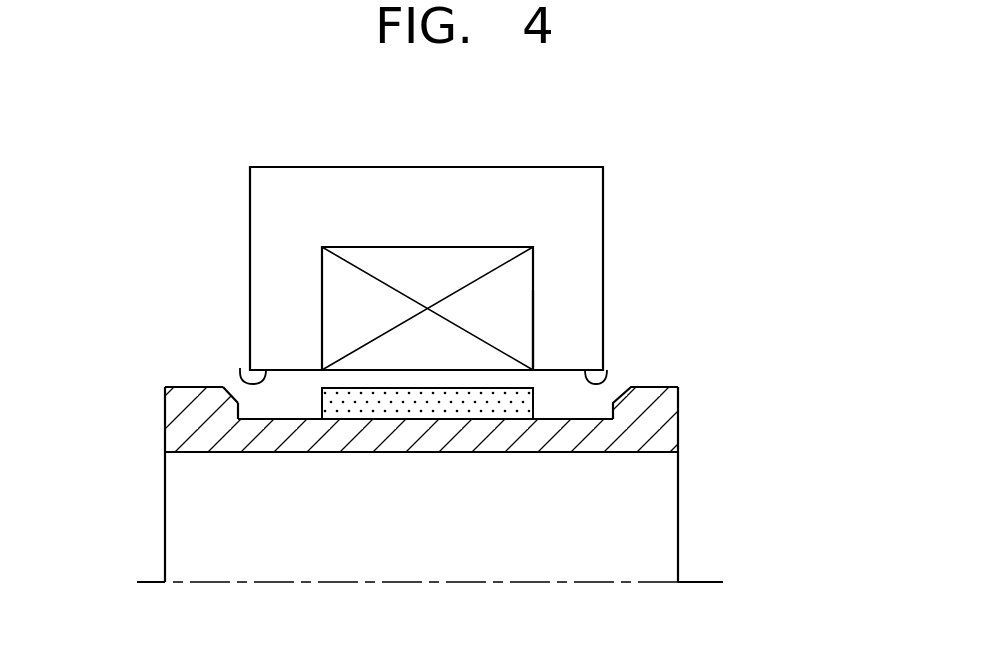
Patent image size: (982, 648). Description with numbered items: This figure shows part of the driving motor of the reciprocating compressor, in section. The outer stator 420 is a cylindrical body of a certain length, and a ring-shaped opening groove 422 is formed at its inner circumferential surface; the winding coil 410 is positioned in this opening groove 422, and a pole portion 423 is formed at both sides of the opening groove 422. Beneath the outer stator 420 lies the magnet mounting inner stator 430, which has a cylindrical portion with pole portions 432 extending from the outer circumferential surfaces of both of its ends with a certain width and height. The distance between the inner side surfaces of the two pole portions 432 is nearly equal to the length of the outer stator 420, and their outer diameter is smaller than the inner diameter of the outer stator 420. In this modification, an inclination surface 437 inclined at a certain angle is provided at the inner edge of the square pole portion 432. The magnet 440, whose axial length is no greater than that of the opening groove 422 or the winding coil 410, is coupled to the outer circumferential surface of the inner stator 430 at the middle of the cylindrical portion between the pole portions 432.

The winding coil 410 is at (398, 263).
The outer stator 420 is at (612, 253).
The opening groove 422 is at (533, 303).
The pole portion 423 is at (240, 368).
The magnet mounting inner stator 430 is at (683, 418).
The pole portion 432 is at (190, 387).
The inclination surface 437 is at (228, 386).
The magnet 440 is at (542, 407).